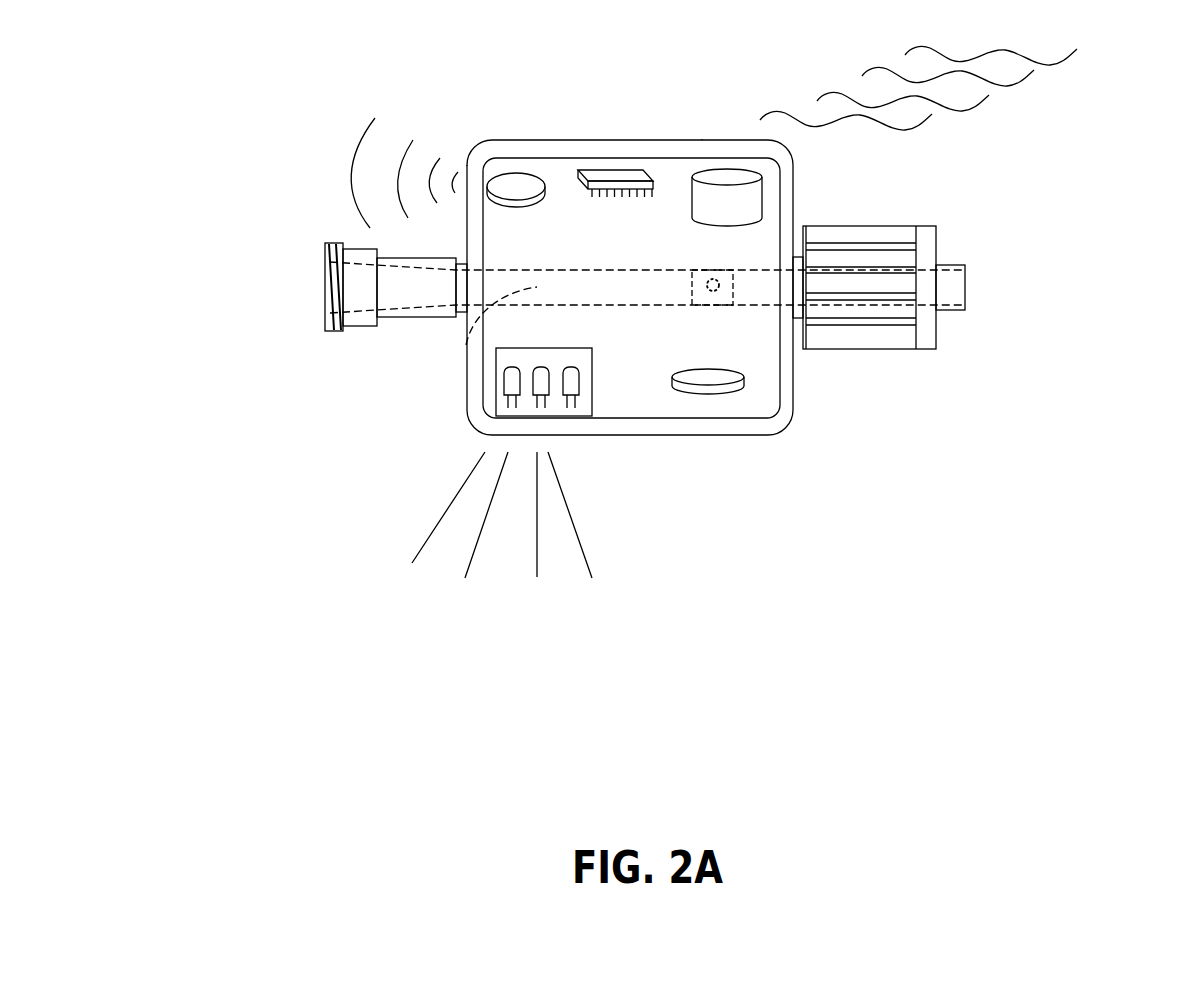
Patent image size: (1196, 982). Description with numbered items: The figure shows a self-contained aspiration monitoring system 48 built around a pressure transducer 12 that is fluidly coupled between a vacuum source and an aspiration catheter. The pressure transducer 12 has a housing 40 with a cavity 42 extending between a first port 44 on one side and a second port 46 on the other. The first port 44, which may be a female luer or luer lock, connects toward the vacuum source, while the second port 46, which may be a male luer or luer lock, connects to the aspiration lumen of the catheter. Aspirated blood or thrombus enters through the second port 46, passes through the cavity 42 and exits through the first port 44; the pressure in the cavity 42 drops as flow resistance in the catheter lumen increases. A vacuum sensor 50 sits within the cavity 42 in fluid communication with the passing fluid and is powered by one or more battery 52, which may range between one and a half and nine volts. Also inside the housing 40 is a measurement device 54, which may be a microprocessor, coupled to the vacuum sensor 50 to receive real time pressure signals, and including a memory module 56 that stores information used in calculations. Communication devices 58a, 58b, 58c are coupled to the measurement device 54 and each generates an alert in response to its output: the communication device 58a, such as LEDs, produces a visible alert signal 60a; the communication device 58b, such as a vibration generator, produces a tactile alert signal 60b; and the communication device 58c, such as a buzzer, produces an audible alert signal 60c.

The pressure transducer 12 is at (702, 139).
The housing 40 is at (657, 436).
The cavity 42 is at (466, 345).
The first port 44 is at (330, 332).
The second port 46 is at (953, 313).
The aspiration monitoring system 48 is at (426, 85).
The vacuum sensor 50 is at (718, 291).
The battery 52 is at (743, 388).
The measurement device 54 is at (647, 160).
The memory module 56 is at (627, 175).
The communication device 58a is at (535, 395).
The communication device 58b is at (745, 197).
The communication device 58c is at (518, 186).
The visible alert signal 60a is at (461, 598).
The tactile alert signal 60b is at (1012, 99).
The audible alert signal 60c is at (335, 150).